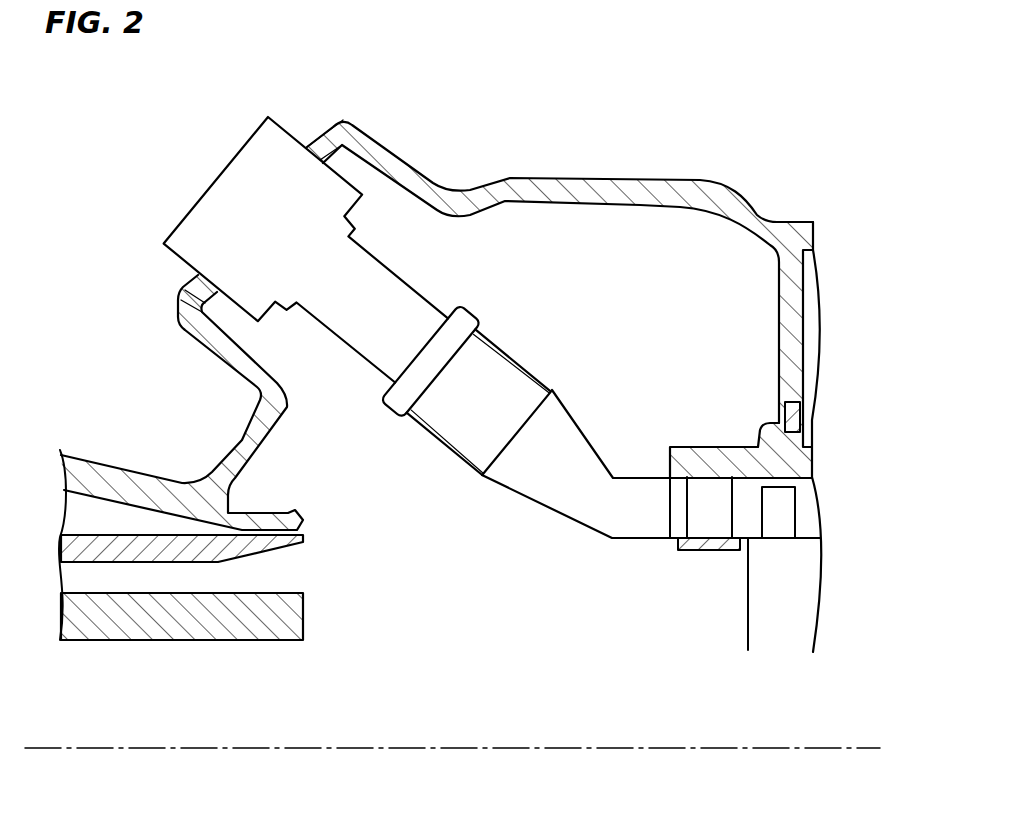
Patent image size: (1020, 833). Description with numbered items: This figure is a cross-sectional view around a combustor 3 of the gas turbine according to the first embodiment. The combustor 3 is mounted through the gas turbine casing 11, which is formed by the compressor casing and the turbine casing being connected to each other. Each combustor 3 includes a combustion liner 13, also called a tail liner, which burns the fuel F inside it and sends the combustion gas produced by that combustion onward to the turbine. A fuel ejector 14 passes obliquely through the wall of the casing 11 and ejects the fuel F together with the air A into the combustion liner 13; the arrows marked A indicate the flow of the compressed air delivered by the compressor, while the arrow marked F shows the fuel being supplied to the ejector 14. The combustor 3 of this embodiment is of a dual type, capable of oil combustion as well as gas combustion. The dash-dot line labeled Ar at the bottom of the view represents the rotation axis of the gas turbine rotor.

The fuel ejector 14 is at (262, 163).
The gas turbine casing 11 is at (593, 183).
The combustion liner 13 is at (520, 380).
The combustor 3 is at (443, 470).
The fuel F is at (205, 171).
The air A is at (410, 235).
The rotation axis Ar is at (825, 745).